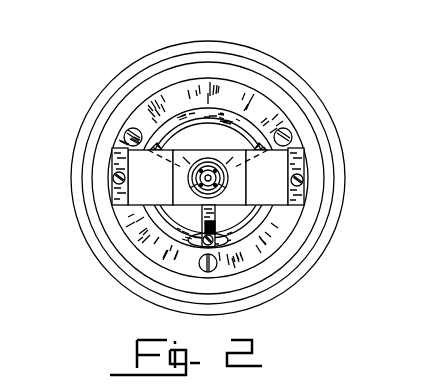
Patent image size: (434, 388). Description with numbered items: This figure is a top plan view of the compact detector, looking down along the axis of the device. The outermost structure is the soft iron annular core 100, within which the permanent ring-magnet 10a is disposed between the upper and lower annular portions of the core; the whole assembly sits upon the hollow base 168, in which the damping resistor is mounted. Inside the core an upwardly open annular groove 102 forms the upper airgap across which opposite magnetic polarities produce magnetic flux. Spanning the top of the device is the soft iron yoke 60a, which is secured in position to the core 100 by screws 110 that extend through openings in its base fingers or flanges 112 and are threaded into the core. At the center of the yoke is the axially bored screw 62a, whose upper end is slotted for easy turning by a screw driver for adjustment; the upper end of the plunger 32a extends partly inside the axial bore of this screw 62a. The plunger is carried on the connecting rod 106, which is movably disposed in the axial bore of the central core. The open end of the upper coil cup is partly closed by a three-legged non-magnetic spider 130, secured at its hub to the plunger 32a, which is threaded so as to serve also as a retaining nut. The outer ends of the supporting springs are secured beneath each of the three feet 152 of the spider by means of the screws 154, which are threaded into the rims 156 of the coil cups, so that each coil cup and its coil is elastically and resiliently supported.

The soft iron annular core 100 is at (235, 75).
The permanent ring-magnet 10a is at (284, 82).
The soft iron yoke 60a is at (280, 163).
The base fingers or flanges 112 is at (300, 163).
The screws 110 is at (306, 188).
The upwardly open annular groove 102 is at (280, 224).
The spiders 130 is at (262, 233).
The hollow base 168 is at (284, 289).
The rims of the coil cups 156 is at (248, 118).
The connecting rod 106 is at (209, 160).
The axially bored screw 62a is at (196, 188).
The plunger 32a is at (222, 188).
The screws 154 is at (198, 243).
The feet of the spiders 152 is at (227, 244).